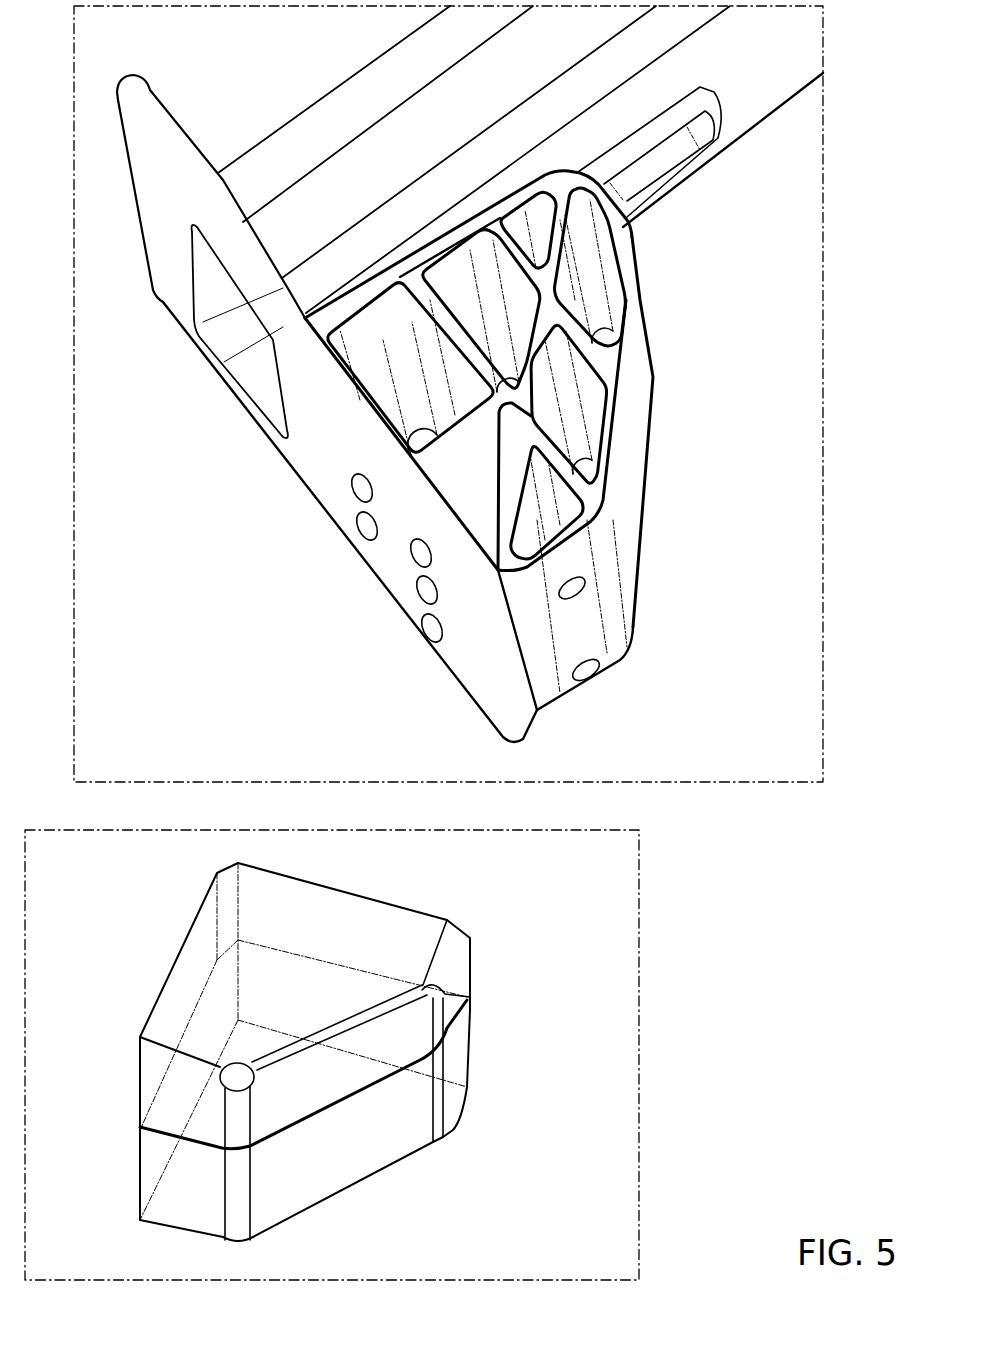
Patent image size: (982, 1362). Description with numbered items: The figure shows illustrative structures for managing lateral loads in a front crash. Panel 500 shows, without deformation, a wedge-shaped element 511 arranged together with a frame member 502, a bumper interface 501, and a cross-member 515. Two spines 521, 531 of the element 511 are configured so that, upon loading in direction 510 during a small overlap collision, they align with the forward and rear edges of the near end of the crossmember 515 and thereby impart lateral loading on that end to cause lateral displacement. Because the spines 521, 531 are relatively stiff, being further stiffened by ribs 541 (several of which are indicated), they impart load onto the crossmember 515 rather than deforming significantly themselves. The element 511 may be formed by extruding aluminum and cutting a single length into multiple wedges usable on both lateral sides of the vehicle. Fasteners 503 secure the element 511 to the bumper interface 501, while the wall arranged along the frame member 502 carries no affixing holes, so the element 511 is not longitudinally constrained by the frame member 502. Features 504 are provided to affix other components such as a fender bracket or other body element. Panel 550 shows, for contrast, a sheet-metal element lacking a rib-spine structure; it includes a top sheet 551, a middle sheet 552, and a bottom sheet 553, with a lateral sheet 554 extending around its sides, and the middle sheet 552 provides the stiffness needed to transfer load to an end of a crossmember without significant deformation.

The panel 500 is at (266, 38).
The bumper interface 501 is at (494, 600).
The frame member 502 is at (456, 143).
The fasteners 503 is at (352, 538).
The features 504 is at (600, 579).
The direction 510 is at (219, 484).
The element 511 is at (685, 464).
The cross-member 515 is at (700, 178).
The spine 521 is at (645, 297).
The spine 531 is at (575, 237).
The ribs 541 is at (490, 254).
The panel 550 is at (597, 893).
The top sheet 551 is at (462, 1000).
The middle sheet 552 is at (413, 1068).
The bottom sheet 553 is at (403, 1168).
The lateral sheet 554 is at (282, 1168).